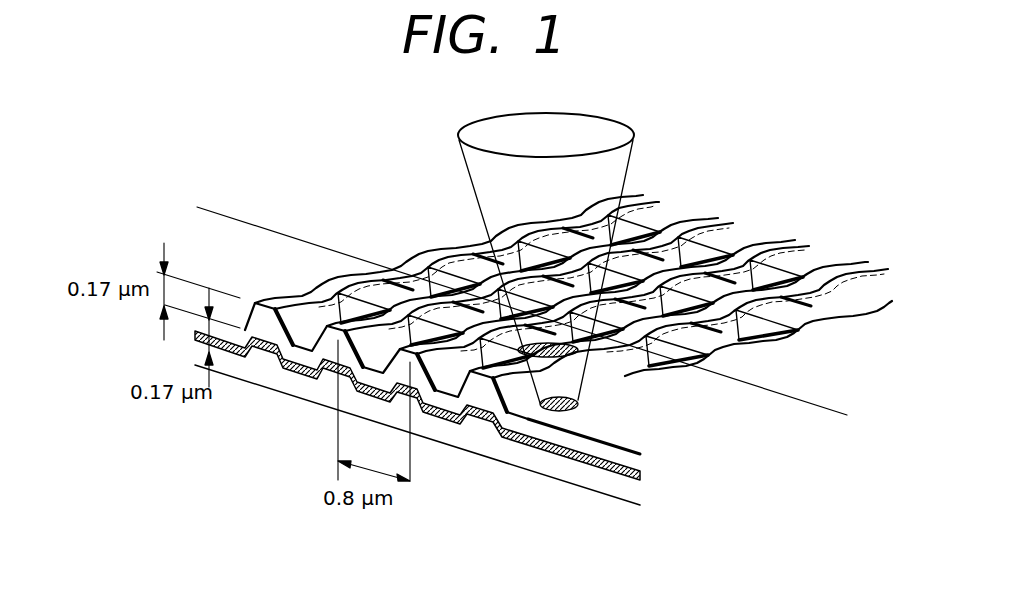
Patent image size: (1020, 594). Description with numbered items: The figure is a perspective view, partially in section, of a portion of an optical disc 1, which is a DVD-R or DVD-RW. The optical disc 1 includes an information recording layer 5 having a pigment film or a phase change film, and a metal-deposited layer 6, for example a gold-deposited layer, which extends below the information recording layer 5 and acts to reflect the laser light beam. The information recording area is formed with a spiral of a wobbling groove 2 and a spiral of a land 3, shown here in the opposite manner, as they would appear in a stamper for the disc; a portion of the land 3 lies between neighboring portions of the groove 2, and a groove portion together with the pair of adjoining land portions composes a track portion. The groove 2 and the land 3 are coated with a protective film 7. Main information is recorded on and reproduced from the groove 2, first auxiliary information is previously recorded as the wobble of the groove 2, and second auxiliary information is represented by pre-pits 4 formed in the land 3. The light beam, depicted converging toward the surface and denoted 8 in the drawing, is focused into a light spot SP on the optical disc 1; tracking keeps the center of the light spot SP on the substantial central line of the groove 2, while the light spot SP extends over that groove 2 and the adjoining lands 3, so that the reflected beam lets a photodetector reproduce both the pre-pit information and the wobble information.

The optical disc 1 is at (720, 462).
The wobbling groove 2 is at (318, 301).
The land 3 is at (305, 347).
The pre-pits 4 is at (380, 293).
The information recording layer 5 is at (616, 446).
The metal-deposited layer 6 is at (573, 463).
The protective film 7 is at (243, 222).
The laser beam 8 is at (628, 142).
The light spot SP is at (574, 378).